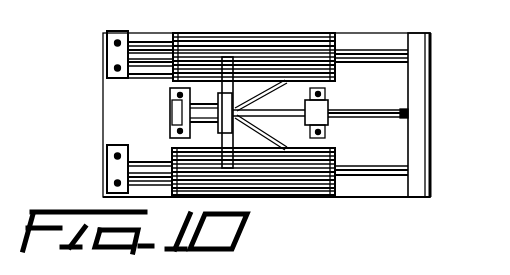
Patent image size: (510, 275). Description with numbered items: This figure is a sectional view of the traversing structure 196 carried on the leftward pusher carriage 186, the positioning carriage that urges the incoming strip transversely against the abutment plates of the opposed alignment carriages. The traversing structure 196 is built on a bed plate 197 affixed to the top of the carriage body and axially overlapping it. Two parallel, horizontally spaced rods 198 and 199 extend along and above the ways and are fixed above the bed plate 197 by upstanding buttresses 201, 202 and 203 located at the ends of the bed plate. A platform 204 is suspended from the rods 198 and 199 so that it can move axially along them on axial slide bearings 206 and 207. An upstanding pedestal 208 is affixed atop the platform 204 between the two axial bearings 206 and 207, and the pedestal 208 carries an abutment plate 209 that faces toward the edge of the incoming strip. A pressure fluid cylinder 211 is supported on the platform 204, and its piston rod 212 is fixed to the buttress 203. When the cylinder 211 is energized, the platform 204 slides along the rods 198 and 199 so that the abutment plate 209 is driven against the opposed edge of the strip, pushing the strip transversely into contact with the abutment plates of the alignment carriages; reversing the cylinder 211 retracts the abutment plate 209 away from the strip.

The pusher carriage 186 is at (440, 34).
The traversing structure 196 is at (357, 152).
The bed plate 197 is at (398, 142).
The rod 198 is at (396, 172).
The rod 199 is at (353, 56).
The buttress 201 is at (115, 172).
The buttress 202 is at (115, 53).
The buttress 203 is at (415, 63).
The platform 204 is at (313, 142).
The axial slide bearing 206 is at (302, 178).
The axial slide bearing 207 is at (250, 42).
The pedestal 208 is at (250, 86).
The abutment plate 209 is at (222, 105).
The pressure fluid cylinder 211 is at (293, 113).
The piston rod 212 is at (390, 110).